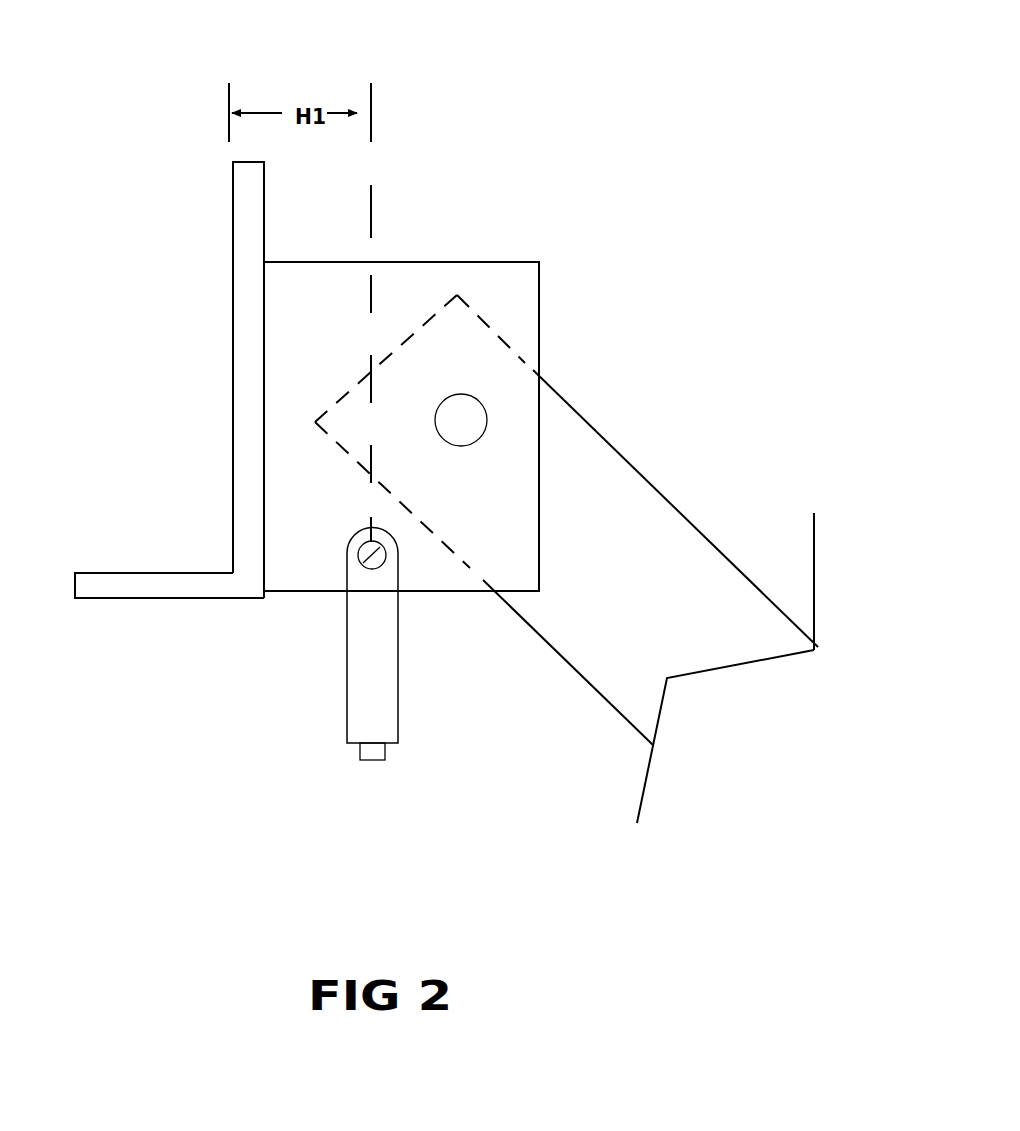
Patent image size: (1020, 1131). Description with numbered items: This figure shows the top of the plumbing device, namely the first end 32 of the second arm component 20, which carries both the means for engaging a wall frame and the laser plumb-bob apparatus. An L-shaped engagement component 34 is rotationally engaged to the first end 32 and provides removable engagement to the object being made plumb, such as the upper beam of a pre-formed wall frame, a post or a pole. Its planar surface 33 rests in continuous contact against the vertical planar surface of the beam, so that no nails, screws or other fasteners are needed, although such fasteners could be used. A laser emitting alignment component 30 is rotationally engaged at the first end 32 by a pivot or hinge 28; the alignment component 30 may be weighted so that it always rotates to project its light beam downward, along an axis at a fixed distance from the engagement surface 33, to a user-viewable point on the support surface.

The second arm component 20 is at (685, 517).
The pivot or hinge 28 is at (473, 398).
The laser emitting alignment component 30 is at (348, 688).
The first end 32 is at (542, 156).
The planar surface 33 is at (232, 268).
The engagement component 34 is at (178, 572).